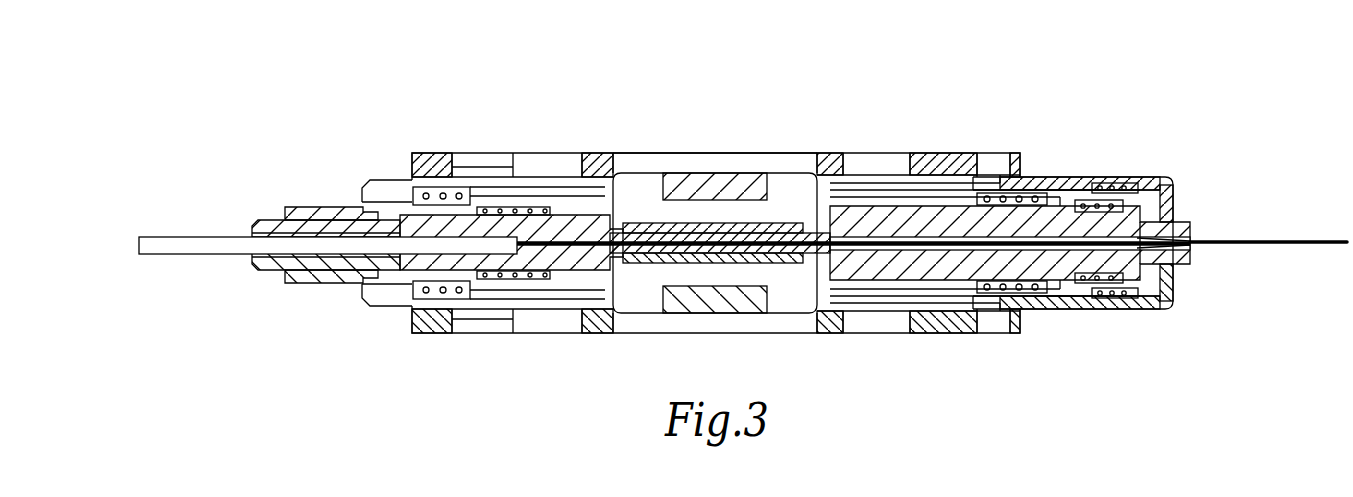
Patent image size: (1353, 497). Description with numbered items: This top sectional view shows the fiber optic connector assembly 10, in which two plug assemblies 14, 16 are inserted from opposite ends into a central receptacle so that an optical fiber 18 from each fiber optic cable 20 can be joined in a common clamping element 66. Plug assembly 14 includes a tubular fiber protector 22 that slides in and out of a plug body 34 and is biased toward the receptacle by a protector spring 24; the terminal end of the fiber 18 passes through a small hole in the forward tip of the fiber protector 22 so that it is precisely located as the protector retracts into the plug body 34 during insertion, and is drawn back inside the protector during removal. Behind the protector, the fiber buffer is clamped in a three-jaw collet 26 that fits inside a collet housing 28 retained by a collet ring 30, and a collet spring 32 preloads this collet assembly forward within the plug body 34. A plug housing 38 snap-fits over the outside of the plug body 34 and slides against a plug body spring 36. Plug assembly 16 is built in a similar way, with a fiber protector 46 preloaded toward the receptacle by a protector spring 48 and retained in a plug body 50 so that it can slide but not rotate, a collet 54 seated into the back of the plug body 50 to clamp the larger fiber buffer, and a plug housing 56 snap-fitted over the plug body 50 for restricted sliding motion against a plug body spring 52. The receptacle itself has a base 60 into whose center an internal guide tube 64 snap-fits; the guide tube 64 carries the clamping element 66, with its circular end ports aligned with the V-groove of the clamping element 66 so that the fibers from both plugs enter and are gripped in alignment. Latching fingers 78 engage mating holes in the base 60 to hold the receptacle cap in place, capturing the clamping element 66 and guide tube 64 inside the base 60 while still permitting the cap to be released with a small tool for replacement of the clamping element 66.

The fiber optic connector assembly 10 is at (743, 208).
The plug assembly 14 is at (1082, 238).
The plug assembly 16 is at (318, 200).
The fiber 18 is at (1278, 237).
The fiber optic cable 20 is at (232, 257).
The tubular fiber protector 22 is at (940, 175).
The protector spring 24 is at (988, 300).
The collet 26 is at (913, 293).
The collet housing 28 is at (880, 204).
The collet ring 30 is at (1042, 287).
The collet spring 32 is at (1105, 205).
The plug body 34 is at (860, 190).
The plug body spring 36 is at (1142, 177).
The plug housing 38 is at (1140, 308).
The fiber protector 46 is at (568, 262).
The protector spring 48 is at (520, 204).
The plug body 50 is at (337, 283).
The plug body spring 52 is at (440, 196).
The collet 54 is at (277, 271).
The plug housing 56 is at (392, 310).
The base 60 is at (658, 145).
The internal guide tube 64 is at (792, 300).
The clamping element 66 is at (650, 262).
The latching fingers 78 is at (737, 182).